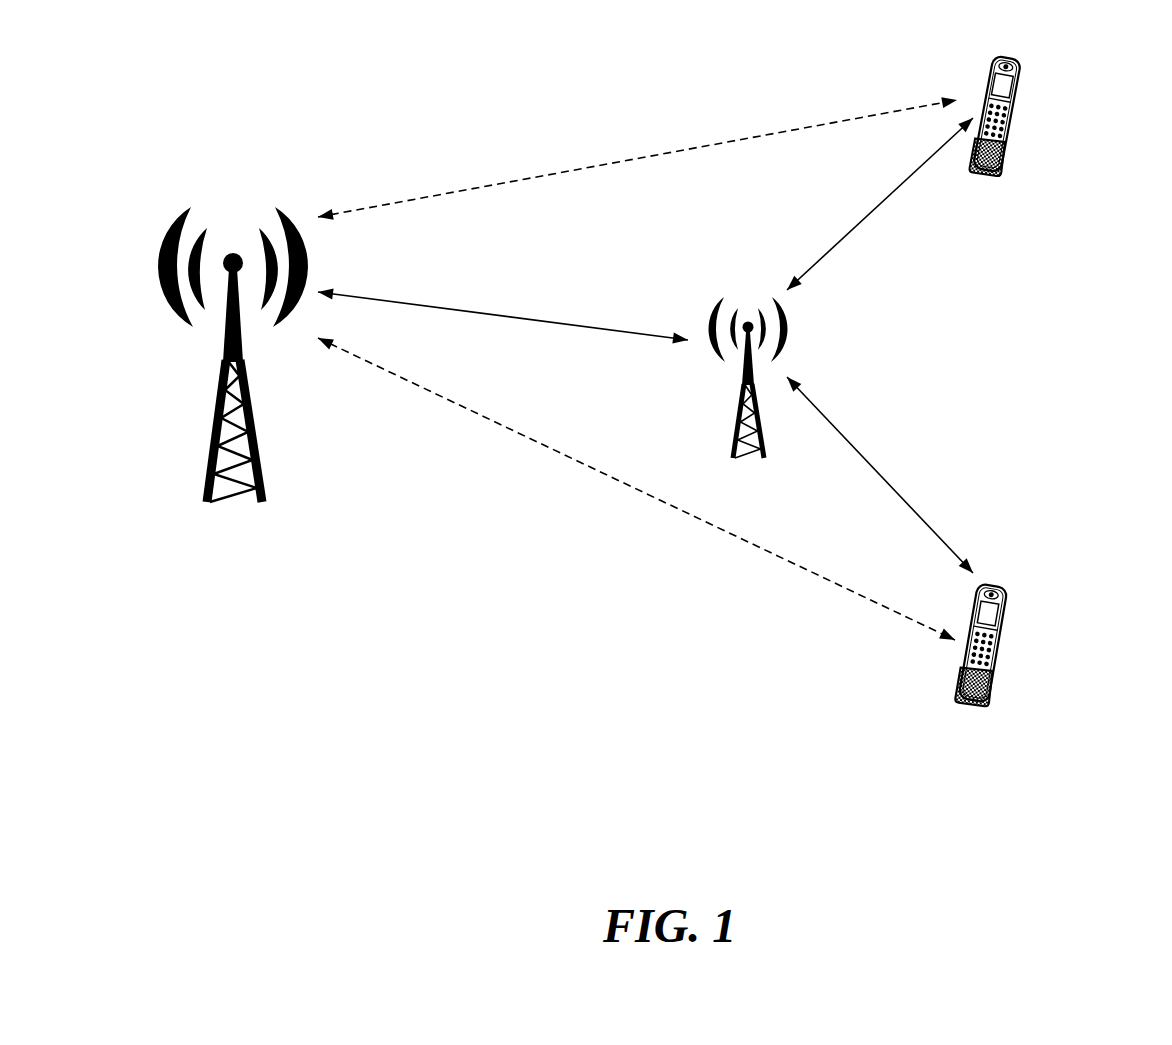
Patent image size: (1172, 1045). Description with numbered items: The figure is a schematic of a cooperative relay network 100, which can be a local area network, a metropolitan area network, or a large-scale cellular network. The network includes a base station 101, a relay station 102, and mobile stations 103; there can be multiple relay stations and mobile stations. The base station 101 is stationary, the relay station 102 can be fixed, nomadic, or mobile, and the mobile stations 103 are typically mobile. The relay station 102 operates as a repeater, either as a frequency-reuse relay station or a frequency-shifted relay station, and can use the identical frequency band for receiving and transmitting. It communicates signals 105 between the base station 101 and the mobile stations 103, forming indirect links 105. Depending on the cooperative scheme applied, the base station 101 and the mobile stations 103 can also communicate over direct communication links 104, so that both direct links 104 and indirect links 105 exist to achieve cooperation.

The cooperative relay network 100 is at (706, 890).
The base station 101 is at (193, 455).
The relay station 102 is at (728, 392).
The mobile station 103 is at (1030, 93).
The direct communication links 104 is at (548, 467).
The indirect links 105 is at (852, 235).